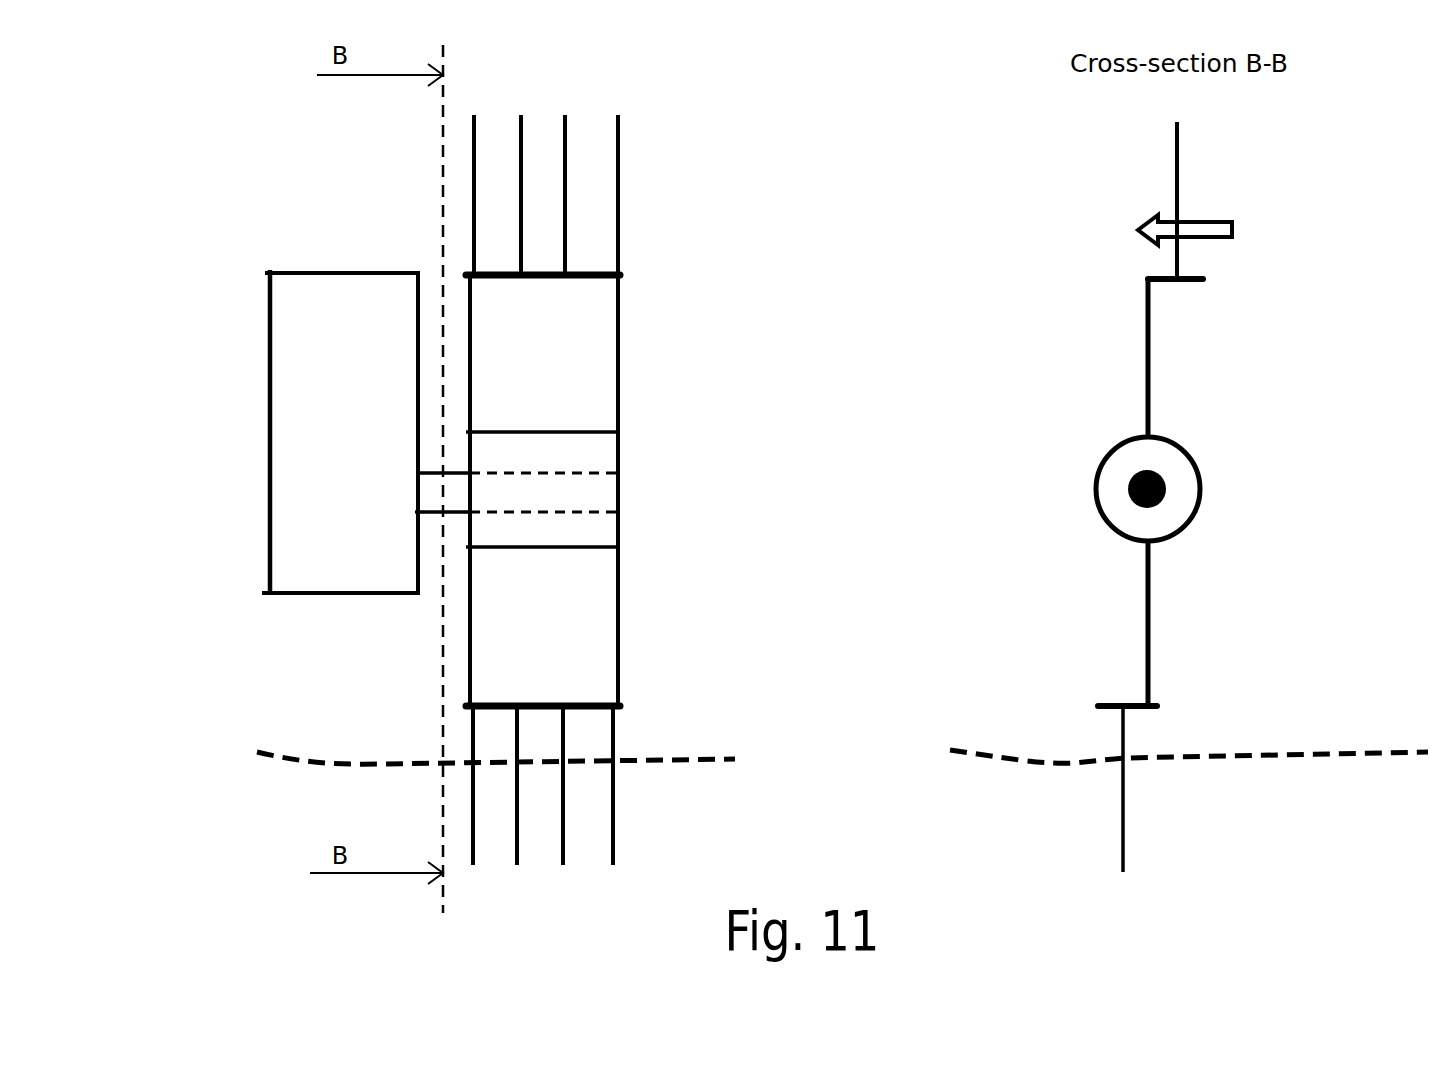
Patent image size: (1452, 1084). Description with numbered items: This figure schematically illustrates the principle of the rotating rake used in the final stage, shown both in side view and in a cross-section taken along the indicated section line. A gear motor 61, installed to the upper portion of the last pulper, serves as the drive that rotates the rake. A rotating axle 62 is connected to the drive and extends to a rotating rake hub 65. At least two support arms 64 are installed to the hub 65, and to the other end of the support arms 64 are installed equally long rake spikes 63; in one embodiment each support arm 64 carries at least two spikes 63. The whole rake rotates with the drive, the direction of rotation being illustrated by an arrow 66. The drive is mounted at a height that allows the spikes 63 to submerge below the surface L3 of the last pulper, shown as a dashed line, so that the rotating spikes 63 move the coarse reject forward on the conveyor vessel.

The gear motor 61 is at (320, 354).
The rotating axle 62 is at (457, 488).
The rake spikes 63 is at (1175, 212).
The support arms 64 is at (1148, 352).
The rotating rake hub 65 is at (1110, 465).
The arrow 66 is at (1223, 240).
The surface of the last pulper L3 is at (633, 752).